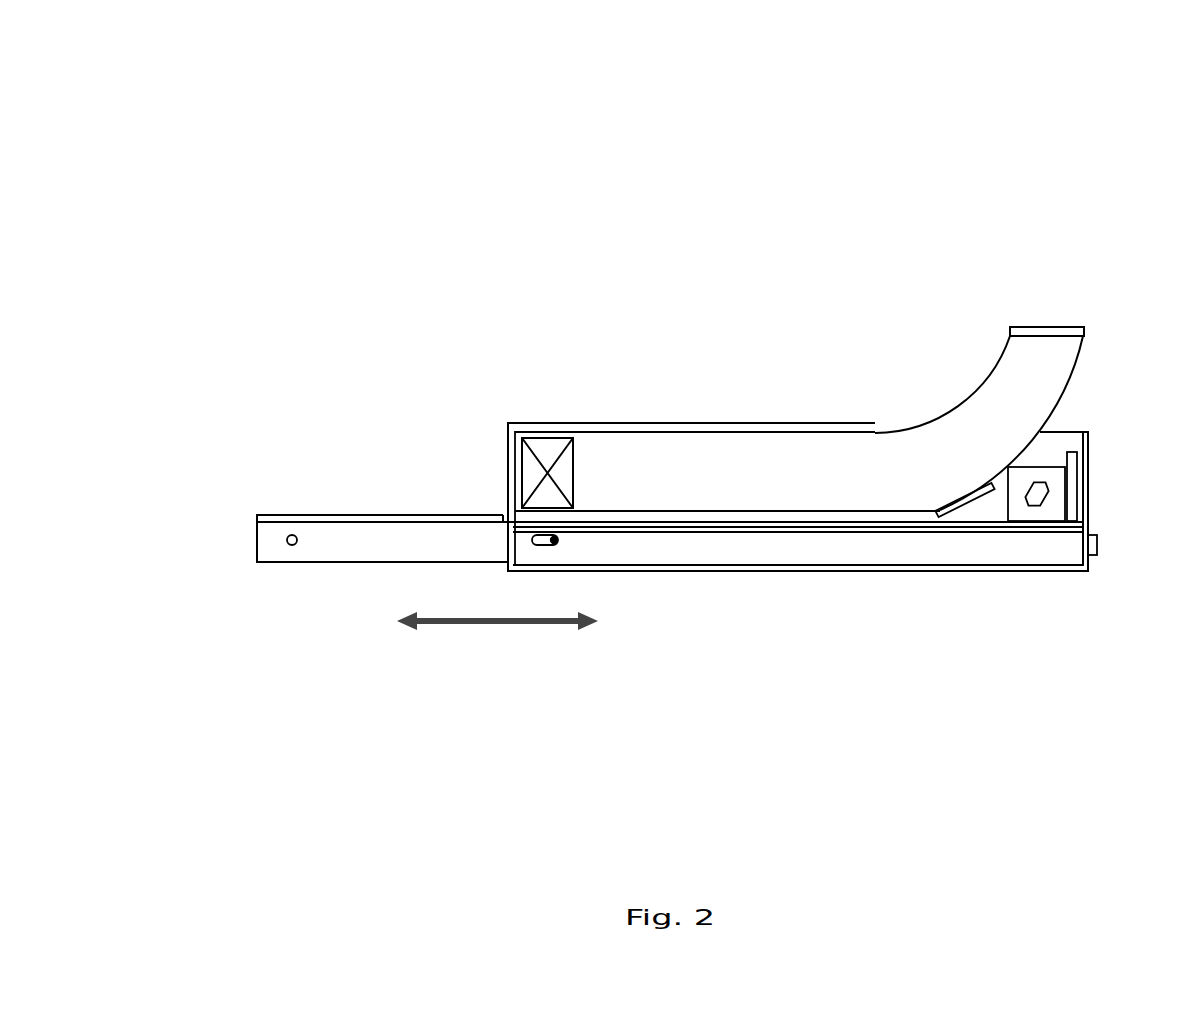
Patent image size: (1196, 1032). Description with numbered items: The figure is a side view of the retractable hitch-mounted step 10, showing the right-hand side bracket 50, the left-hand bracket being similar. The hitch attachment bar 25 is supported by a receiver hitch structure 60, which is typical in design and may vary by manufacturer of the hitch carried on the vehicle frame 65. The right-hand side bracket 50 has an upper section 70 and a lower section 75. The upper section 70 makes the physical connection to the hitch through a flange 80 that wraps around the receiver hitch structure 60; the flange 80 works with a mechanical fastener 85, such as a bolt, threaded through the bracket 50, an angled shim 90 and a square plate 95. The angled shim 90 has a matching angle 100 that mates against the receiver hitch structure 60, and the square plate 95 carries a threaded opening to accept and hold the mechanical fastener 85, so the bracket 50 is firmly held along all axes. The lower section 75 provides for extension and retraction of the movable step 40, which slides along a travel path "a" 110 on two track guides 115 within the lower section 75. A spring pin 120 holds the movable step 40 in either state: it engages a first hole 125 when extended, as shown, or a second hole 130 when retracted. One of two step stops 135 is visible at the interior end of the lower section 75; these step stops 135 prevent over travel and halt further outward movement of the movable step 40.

The retractable hitch-mounted step 10 is at (238, 183).
The hitch attachment bar 25 is at (548, 462).
The movable step 40 is at (377, 513).
The right-hand side bracket 50 is at (1088, 485).
The receiver hitch structure 60 is at (1008, 397).
The vehicle frame 65 is at (1058, 328).
The upper section 70 is at (797, 469).
The lower section 75 is at (763, 553).
The flange 80 is at (777, 427).
The mechanical fastener 85 is at (1037, 497).
The angled shim 90 is at (1072, 462).
The square plate 95 is at (1058, 487).
The matching angle 100 is at (985, 485).
The travel path "a" 110 is at (455, 625).
The track guide 115 is at (880, 565).
The spring pin 120 is at (553, 546).
The first hole 125 is at (557, 545).
The second hole 130 is at (285, 545).
The step stop 135 is at (1092, 555).